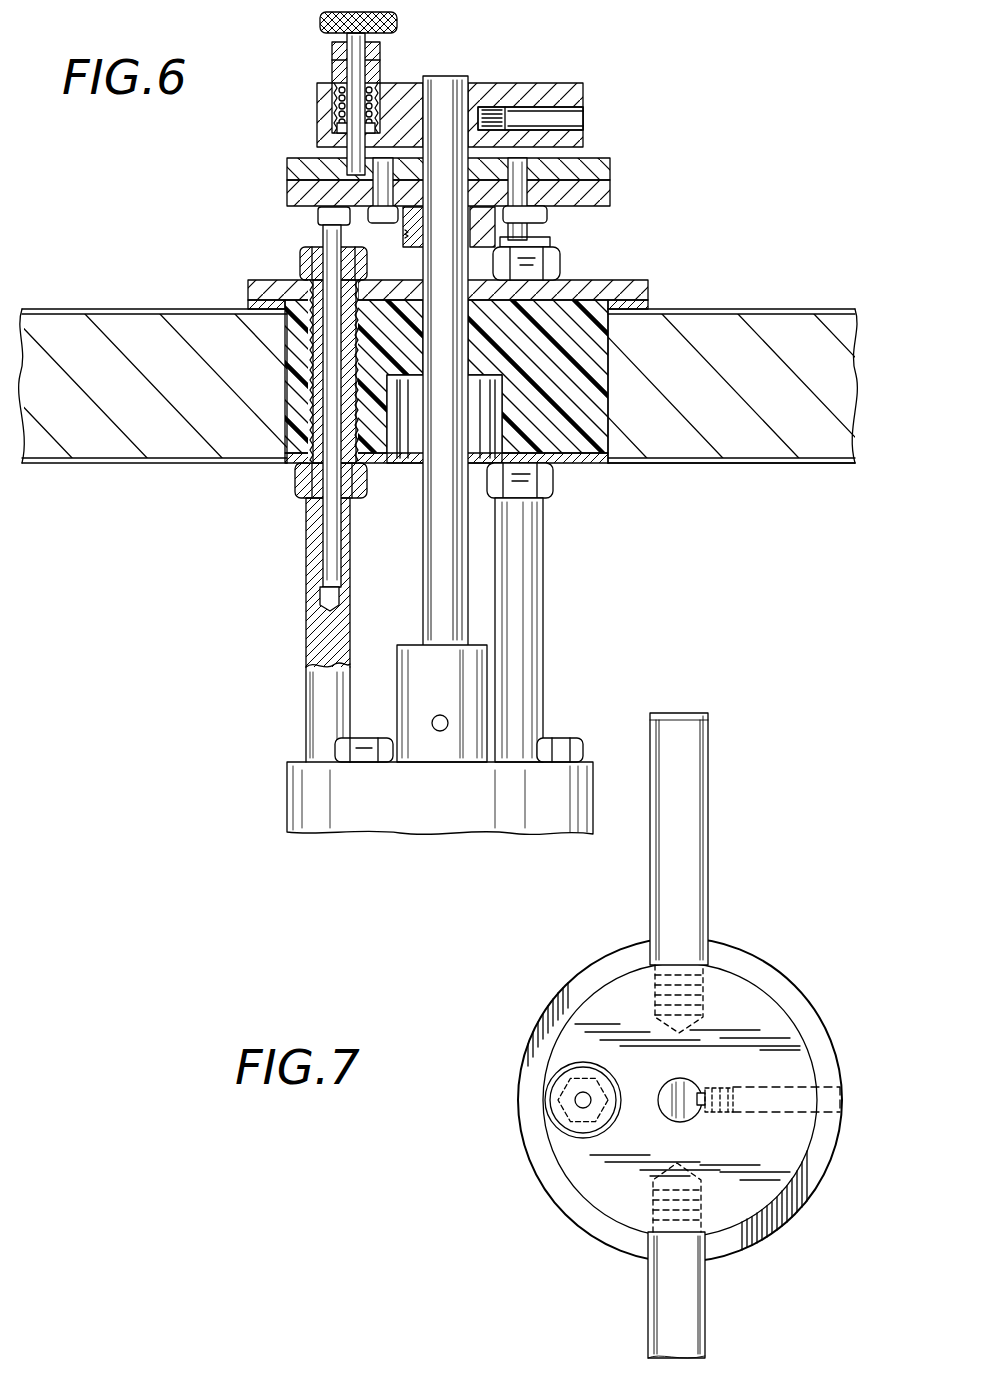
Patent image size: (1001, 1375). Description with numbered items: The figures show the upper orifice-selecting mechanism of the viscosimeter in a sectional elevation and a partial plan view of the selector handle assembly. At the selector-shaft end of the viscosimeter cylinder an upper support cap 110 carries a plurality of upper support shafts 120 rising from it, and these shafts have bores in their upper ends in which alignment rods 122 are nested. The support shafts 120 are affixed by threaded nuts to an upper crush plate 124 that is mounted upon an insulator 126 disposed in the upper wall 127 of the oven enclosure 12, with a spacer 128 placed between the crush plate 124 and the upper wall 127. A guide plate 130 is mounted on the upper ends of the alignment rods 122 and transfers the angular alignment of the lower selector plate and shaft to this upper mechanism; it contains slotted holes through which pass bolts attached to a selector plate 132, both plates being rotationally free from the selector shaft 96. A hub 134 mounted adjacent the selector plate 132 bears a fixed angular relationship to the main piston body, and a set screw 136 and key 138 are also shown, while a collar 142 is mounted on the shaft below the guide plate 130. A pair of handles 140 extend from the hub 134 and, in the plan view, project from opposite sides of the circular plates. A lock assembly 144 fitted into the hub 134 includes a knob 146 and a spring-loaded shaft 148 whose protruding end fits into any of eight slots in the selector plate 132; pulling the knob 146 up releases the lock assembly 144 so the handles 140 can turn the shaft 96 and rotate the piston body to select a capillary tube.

In FIG. 6, the oven enclosure 12 is at (776, 326).
In FIG. 6, the selector shaft 96 is at (430, 592).
In FIG. 7, the selector shaft 96 is at (665, 1094).
In FIG. 6, the upper support cap 110 is at (297, 803).
In FIG. 6, the upper support shafts 120 is at (528, 625).
In FIG. 6, the alignment rods 122 is at (327, 548).
In FIG. 6, the upper crush plate 124 is at (265, 280).
In FIG. 6, the insulator 126 is at (290, 357).
In FIG. 6, the upper wall 127 is at (691, 470).
In FIG. 6, the spacer 128 is at (652, 303).
In FIG. 6, the guide plate 130 is at (612, 201).
In FIG. 6, the selector plate 132 is at (612, 167).
In FIG. 7, the selector plate 132 is at (818, 1185).
In FIG. 6, the hub 134 is at (585, 141).
In FIG. 7, the hub 134 is at (568, 1165).
In FIG. 6, the set screw 136 is at (507, 108).
In FIG. 7, the set screw 136 is at (715, 1087).
In FIG. 6, the key 138 is at (476, 80).
In FIG. 7, the key 138 is at (703, 1106).
In FIG. 7, the handles 140 is at (700, 844).
In FIG. 6, the collar 142 is at (415, 249).
In FIG. 6, the lock assembly 144 is at (330, 72).
In FIG. 7, the lock assembly 144 is at (545, 1100).
In FIG. 6, the knob 146 is at (320, 23).
In FIG. 6, the spring-loaded shaft 148 is at (355, 157).